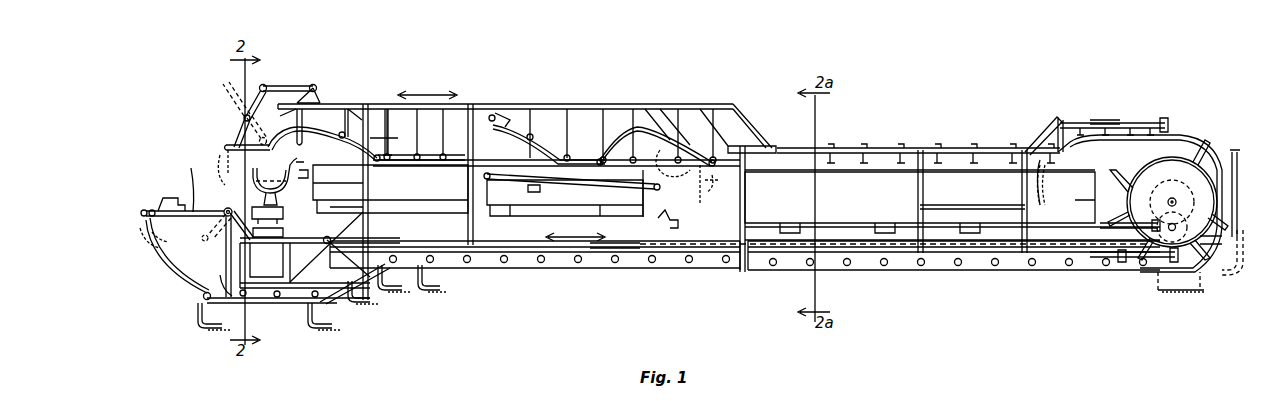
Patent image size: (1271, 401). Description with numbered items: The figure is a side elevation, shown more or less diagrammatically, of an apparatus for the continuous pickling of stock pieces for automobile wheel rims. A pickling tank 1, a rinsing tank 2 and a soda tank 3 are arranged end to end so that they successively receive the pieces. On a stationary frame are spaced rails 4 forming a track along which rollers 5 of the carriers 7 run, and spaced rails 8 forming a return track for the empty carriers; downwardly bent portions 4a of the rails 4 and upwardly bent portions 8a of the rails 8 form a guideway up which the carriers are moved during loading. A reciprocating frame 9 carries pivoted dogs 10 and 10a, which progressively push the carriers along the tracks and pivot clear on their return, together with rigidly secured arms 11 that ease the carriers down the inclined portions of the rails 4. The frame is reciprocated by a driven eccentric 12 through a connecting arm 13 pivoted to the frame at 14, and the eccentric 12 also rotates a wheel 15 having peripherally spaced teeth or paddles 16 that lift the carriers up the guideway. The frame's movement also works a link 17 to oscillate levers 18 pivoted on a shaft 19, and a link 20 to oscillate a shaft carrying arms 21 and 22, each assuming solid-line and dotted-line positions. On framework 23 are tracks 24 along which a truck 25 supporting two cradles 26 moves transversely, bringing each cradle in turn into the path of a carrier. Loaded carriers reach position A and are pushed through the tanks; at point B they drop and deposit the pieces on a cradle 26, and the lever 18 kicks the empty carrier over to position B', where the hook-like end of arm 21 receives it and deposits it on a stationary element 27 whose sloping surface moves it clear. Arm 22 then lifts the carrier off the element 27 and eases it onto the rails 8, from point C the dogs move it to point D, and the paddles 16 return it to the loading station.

The pickling tank 1 is at (952, 205).
The rinsing tank 2 is at (565, 193).
The soda tank 3 is at (390, 189).
The rails 4 is at (540, 150).
The downwardly bent portions 4a is at (1213, 146).
The rollers 5 is at (437, 262).
The carriers 7 is at (358, 316).
The rails 8 is at (590, 268).
The upwardly bent portions 8a is at (1237, 270).
The reciprocating frame 9 is at (628, 110).
The pivoted dogs 10 is at (838, 150).
The pivoted dogs 10a is at (503, 117).
The arms 11 is at (313, 103).
The driven eccentric 12 is at (670, 197).
The connecting arm 13 is at (533, 187).
The pivot 14 is at (487, 175).
The wheel 15 is at (1155, 252).
The teeth or paddles 16 is at (1122, 213).
The link 17 is at (287, 88).
The levers 18 is at (240, 122).
The shaft 19 is at (245, 116).
The link 20 is at (240, 225).
The arm 21 is at (191, 180).
The arm 22 is at (240, 226).
The framework 23 is at (270, 253).
The tracks 24 is at (283, 232).
The truck 25 is at (280, 213).
The cradles 26 is at (255, 185).
The stationary element 27 is at (140, 213).
The position A is at (1170, 123).
The point B is at (324, 144).
The position B' is at (230, 138).
The point C is at (232, 252).
The point D is at (1181, 285).